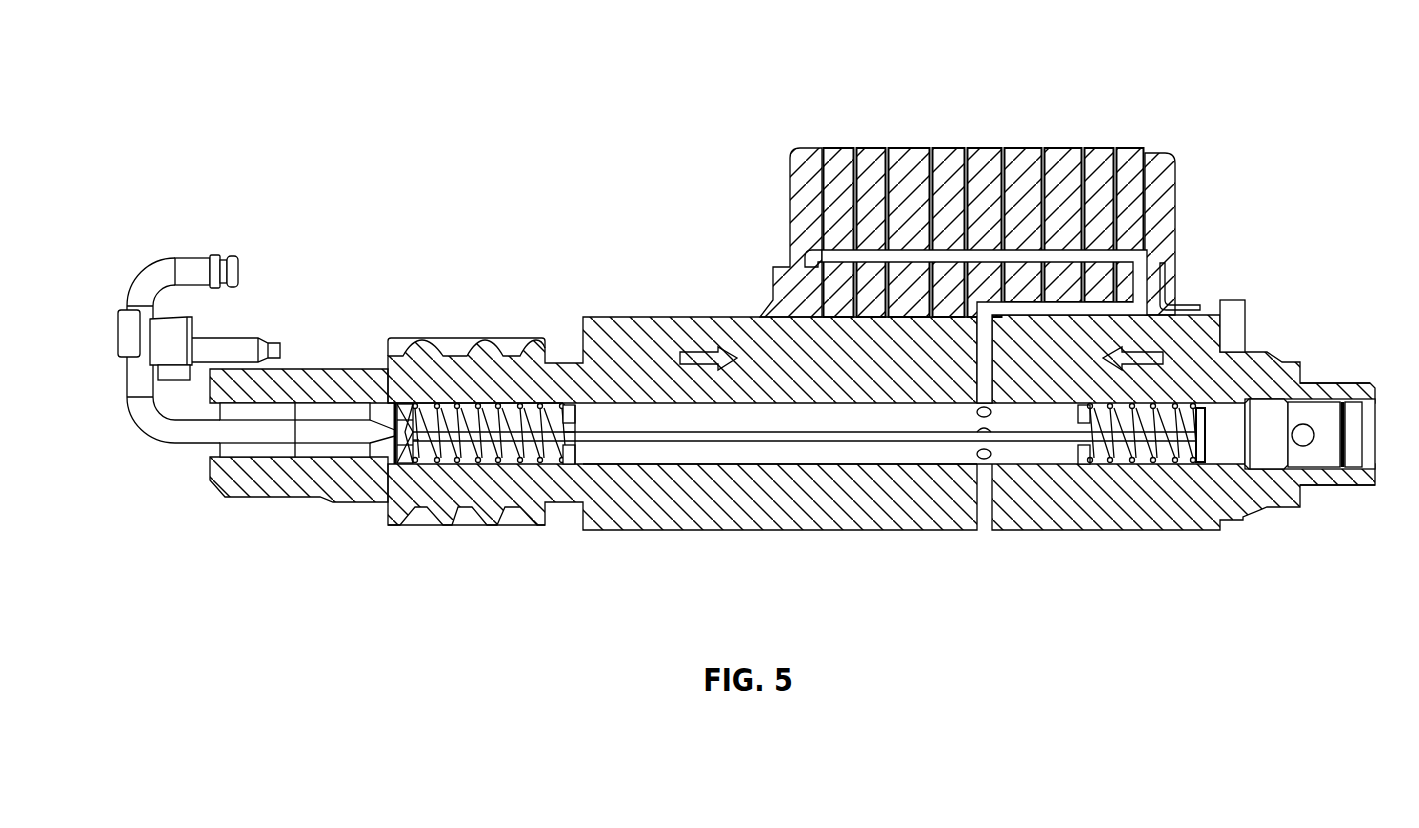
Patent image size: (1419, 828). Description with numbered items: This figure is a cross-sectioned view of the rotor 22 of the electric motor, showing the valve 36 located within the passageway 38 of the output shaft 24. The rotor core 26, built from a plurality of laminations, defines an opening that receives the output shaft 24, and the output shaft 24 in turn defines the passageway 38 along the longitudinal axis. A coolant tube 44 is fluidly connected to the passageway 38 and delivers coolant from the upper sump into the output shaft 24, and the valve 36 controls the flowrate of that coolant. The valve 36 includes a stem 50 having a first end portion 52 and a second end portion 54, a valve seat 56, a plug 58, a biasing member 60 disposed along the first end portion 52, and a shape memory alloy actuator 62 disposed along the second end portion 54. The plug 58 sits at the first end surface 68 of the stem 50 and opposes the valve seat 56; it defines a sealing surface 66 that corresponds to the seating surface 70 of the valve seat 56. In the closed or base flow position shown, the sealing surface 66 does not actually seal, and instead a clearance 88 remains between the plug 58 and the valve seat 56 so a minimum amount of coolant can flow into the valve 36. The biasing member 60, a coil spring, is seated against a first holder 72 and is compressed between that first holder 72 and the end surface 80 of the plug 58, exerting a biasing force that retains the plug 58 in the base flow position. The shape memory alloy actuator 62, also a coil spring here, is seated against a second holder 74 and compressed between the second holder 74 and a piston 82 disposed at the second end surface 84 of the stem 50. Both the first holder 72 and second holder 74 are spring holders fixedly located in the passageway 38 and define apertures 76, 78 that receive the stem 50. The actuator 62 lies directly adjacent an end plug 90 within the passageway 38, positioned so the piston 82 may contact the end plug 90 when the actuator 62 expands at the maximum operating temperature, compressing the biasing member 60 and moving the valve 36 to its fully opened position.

The rotor 22 is at (1209, 85).
The output shaft 24 is at (535, 399).
The rotor core 26 is at (908, 148).
The valve 36 is at (653, 493).
The passageway 38 is at (806, 464).
The coolant tube 44 is at (187, 263).
The stem 50 is at (928, 436).
The first end portion 52 is at (570, 423).
The second end portion 54 is at (1240, 313).
The valve seat 56 is at (387, 455).
The plug 58 is at (400, 435).
The biasing member 60 is at (455, 400).
The shape memory alloy actuator 62 is at (1202, 455).
The sealing surface 66 is at (400, 457).
The first end surface 68 is at (413, 450).
The seating surface 70 is at (398, 462).
The first holder 72 is at (572, 427).
The second holder 74 is at (1085, 467).
The aperture 76 is at (573, 432).
The aperture 78 is at (1088, 425).
The end surface 80 is at (415, 435).
The piston 82 is at (1268, 510).
The second end surface 84 is at (1198, 393).
The clearance 88 is at (400, 443).
The end plug 90 is at (1275, 408).